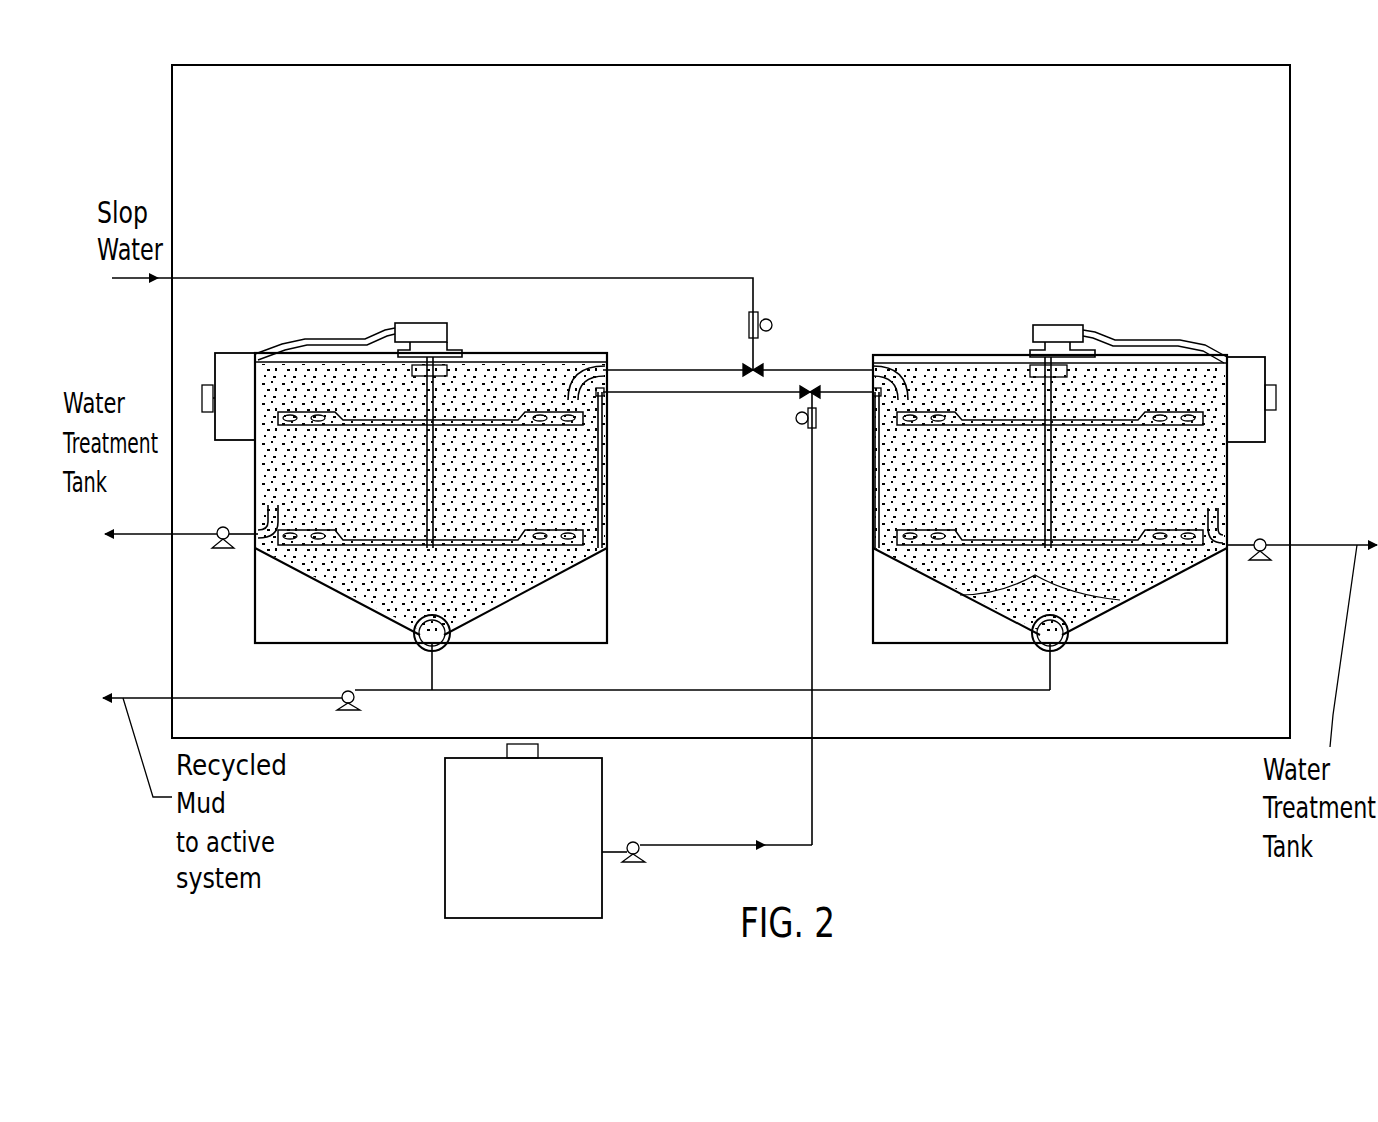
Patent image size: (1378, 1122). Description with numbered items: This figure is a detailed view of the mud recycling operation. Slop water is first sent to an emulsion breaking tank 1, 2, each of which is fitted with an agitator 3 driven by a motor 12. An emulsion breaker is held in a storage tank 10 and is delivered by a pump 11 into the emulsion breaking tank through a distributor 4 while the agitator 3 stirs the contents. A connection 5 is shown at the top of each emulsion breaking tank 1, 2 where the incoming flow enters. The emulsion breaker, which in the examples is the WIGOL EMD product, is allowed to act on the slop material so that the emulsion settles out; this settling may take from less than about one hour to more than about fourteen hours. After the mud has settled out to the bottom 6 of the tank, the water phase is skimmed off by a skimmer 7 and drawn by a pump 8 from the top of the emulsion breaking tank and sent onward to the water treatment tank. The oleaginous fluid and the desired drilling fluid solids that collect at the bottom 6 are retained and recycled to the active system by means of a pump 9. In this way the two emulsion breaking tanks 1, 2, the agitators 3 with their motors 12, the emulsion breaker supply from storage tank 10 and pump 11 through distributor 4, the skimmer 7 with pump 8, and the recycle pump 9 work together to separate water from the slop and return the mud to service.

The emulsion breaking tank 1 is at (256, 482).
The emulsion breaking tank 2 is at (875, 462).
The agitator 3 is at (437, 402).
The distributor 4 is at (603, 460).
The inlet elbow pipe 5 is at (607, 366).
The bottom 6 is at (442, 649).
The skimmer 7 is at (252, 540).
The pump 8 is at (216, 548).
The pump 9 is at (345, 712).
The storage tank 10 is at (445, 888).
The pump 11 is at (635, 863).
The motor 12 is at (228, 352).